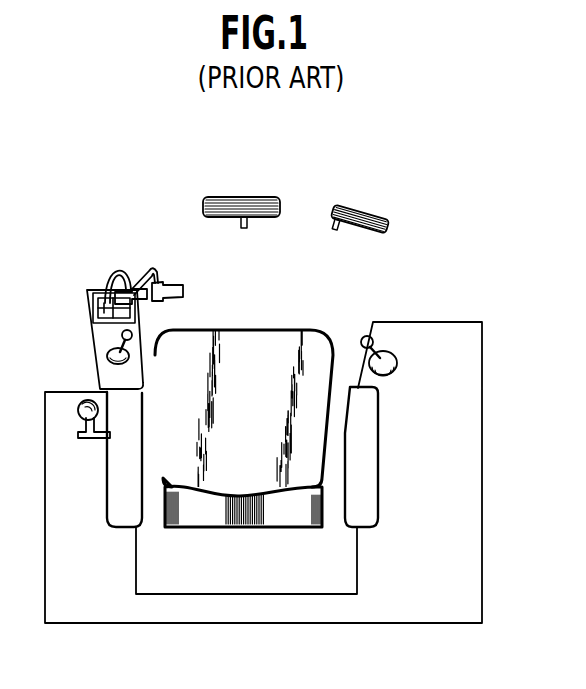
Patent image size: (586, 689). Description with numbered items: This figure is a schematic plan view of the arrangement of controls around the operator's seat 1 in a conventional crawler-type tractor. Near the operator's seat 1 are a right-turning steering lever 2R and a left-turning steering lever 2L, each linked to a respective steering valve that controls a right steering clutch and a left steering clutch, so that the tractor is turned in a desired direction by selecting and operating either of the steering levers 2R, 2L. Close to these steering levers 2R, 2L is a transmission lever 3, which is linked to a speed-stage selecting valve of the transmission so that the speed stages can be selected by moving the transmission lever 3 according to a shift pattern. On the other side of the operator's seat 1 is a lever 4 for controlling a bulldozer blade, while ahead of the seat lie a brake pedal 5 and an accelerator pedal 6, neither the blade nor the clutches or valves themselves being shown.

The operator's seat 1 is at (303, 338).
The left-turning steering lever 2L is at (110, 273).
The right-turning steering lever 2R is at (160, 280).
The transmission lever 3 is at (107, 353).
The lever for controlling a blade 4 is at (380, 335).
The brake pedal 5 is at (268, 197).
The accelerator pedal 6 is at (380, 213).